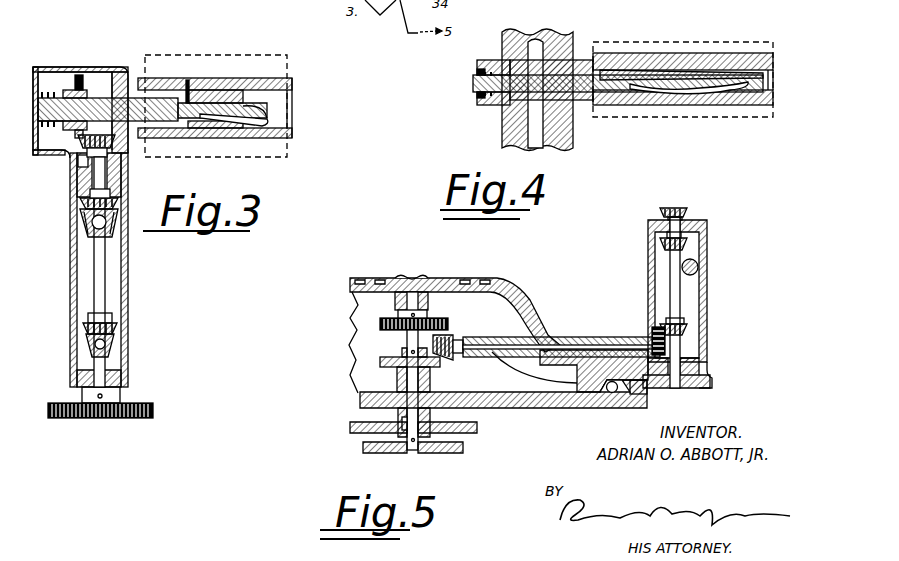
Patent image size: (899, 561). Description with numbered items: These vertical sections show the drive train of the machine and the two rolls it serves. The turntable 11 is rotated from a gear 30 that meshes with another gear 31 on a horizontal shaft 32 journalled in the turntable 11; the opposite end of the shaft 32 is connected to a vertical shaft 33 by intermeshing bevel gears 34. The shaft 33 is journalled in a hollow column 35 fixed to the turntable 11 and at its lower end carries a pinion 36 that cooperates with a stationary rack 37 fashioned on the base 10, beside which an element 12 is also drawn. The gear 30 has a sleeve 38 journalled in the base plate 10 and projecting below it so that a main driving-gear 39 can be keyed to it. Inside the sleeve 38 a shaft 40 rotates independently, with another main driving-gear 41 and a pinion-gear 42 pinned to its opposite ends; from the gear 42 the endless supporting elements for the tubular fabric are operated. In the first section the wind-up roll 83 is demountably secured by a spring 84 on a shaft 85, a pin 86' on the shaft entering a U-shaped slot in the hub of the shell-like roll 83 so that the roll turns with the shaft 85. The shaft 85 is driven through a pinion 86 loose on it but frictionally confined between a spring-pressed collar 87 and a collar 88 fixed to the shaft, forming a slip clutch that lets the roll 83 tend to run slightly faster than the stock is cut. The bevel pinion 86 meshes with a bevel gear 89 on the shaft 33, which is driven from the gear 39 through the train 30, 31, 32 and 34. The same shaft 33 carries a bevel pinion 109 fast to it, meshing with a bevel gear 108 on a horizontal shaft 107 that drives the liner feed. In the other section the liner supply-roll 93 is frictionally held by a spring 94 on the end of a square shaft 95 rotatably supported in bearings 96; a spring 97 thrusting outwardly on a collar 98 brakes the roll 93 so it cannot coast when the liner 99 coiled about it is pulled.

In FIG. 5, the base 10 is at (552, 408).
In FIG. 5, the turntable 11 is at (510, 290).
In FIG. 5, the ball detent 12 is at (608, 393).
In FIG. 5, the gear 30 is at (380, 360).
In FIG. 5, the gear 31 is at (452, 337).
In FIG. 5, the horizontal shaft 32 is at (560, 337).
In FIG. 3, the vertical shaft 33 is at (105, 282).
In FIG. 5, the vertical shaft 33 is at (680, 297).
In FIG. 3, the intermeshing bevel gears 34 is at (112, 346).
In FIG. 5, the intermeshing bevel gears 34 is at (656, 327).
In FIG. 5, the hollow column 35 is at (707, 252).
In FIG. 3, the pinion 36 is at (130, 404).
In FIG. 5, the pinion 36 is at (707, 382).
In FIG. 5, the stationary rack 37 is at (640, 394).
In FIG. 5, the sleeve 38 is at (431, 386).
In FIG. 5, the main driving-gear 39 is at (352, 428).
In FIG. 5, the shaft 40 is at (407, 375).
In FIG. 5, the main driving-gear 41 is at (364, 450).
In FIG. 5, the pinion-gear 42 is at (380, 325).
In FIG. 3, the wind-up roll 83 is at (290, 80).
In FIG. 3, the spring 84 is at (255, 122).
In FIG. 3, the shaft 85 is at (132, 92).
In FIG. 3, the pinion 86 is at (79, 86).
In FIG. 3, the pin 86' is at (210, 91).
In FIG. 3, the spring-pressed collar 87 is at (58, 72).
In FIG. 3, the collar 88 is at (84, 92).
In FIG. 3, the bevel gear 89 is at (112, 142).
In FIG. 5, the bevel gear 89 is at (685, 211).
In FIG. 4, the liner supply-roll 93 is at (760, 58).
In FIG. 4, the spring 94 is at (660, 92).
In FIG. 4, the square shaft 95 is at (612, 72).
In FIG. 4, the bearings 96 is at (570, 70).
In FIG. 4, the spring 97 is at (490, 105).
In FIG. 4, the collar 98 is at (478, 96).
In FIG. 4, the liner 99 is at (693, 40).
In FIG. 3, the horizontal shaft 107 is at (72, 240).
In FIG. 5, the horizontal shaft 107 is at (699, 267).
In FIG. 3, the bevel gear 108 is at (82, 223).
In FIG. 3, the bevel pinion 109 is at (82, 204).
In FIG. 5, the bevel pinion 109 is at (662, 248).